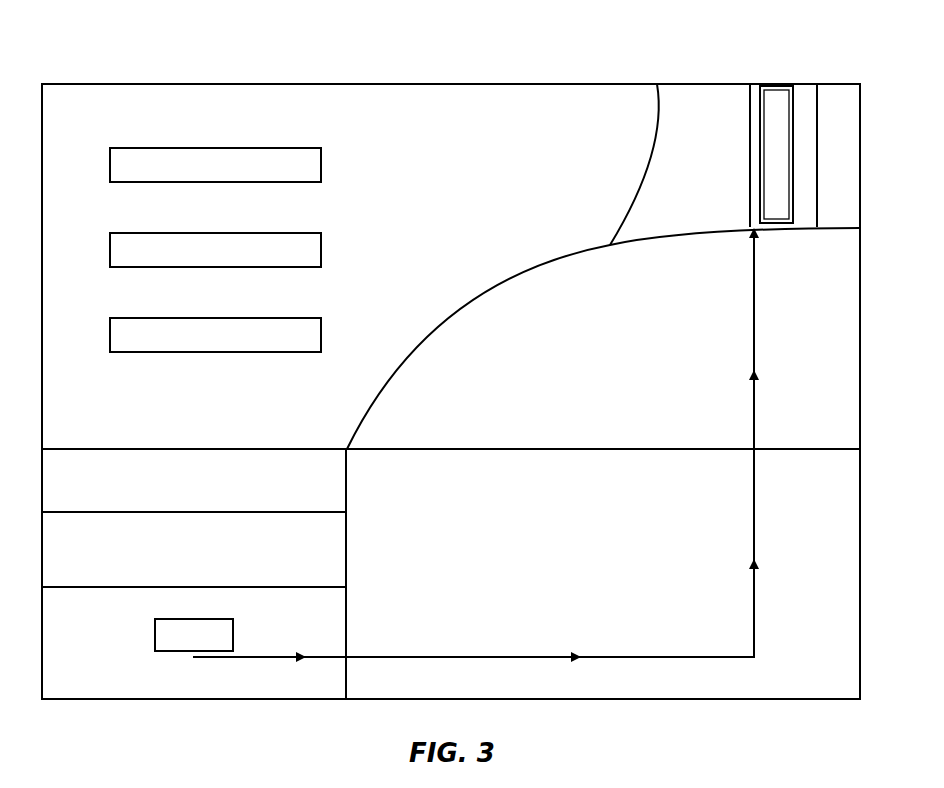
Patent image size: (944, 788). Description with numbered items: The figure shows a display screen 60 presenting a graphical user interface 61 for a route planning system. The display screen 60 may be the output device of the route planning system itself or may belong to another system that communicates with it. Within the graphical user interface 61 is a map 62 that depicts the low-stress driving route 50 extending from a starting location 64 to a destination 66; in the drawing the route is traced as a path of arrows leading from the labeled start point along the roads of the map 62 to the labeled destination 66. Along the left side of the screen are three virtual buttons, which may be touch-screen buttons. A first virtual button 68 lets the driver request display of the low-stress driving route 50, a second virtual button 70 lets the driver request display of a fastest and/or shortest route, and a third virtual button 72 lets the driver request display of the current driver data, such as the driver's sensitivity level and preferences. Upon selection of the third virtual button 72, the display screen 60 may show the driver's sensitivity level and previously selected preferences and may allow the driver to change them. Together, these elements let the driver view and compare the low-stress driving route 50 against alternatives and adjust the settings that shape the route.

The low-stress driving route 50 is at (756, 601).
The display screen 60 is at (408, 84).
The graphical user interface 61 is at (791, 41).
The map 62 is at (436, 257).
The starting location 64 is at (155, 630).
The destination 66 is at (760, 148).
The first virtual button 68 is at (215, 148).
The second virtual button 70 is at (215, 233).
The third virtual button 72 is at (215, 318).